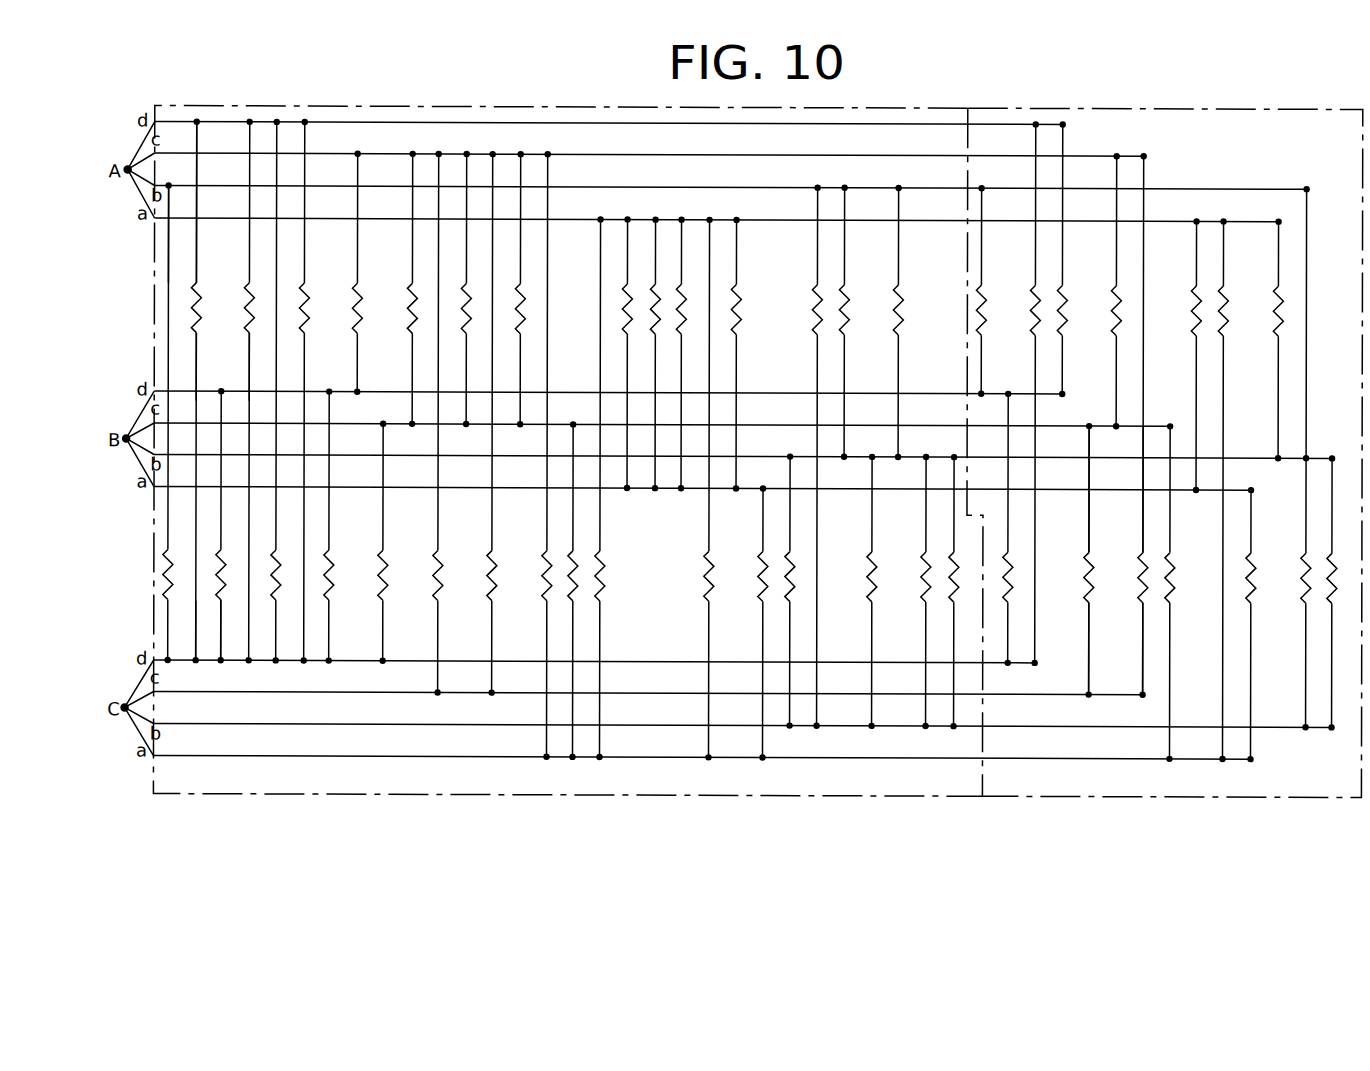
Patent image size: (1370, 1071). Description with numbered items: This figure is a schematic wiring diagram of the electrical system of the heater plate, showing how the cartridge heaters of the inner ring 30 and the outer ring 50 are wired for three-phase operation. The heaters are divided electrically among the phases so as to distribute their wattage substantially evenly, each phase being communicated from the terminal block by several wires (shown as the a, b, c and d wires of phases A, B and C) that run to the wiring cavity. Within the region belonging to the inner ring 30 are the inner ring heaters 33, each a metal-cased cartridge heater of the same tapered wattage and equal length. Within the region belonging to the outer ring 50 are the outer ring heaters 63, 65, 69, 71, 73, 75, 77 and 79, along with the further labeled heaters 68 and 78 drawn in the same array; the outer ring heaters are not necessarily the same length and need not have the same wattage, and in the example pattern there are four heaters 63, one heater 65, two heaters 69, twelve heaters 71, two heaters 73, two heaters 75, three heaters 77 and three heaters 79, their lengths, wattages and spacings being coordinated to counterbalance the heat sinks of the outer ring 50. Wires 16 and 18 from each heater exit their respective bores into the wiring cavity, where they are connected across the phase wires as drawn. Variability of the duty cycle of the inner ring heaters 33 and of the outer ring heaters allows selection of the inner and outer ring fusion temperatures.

The wire 16 is at (197, 254).
The wire 18 is at (249, 362).
The inner ring 30 is at (1170, 110).
The inner ring heater 33 is at (1164, 441).
The outer ring 50 is at (489, 105).
The outer ring heater 63 is at (621, 456).
The outer ring heater 65 is at (745, 354).
The heating element 68 is at (826, 457).
The outer ring heater 69 is at (771, 623).
The outer ring heater 71 is at (704, 456).
The outer ring heater 73 is at (271, 407).
The outer ring heater 75 is at (514, 558).
The outer ring heater 77 is at (650, 559).
The heating element 78 is at (205, 391).
The outer ring heater 79 is at (285, 391).